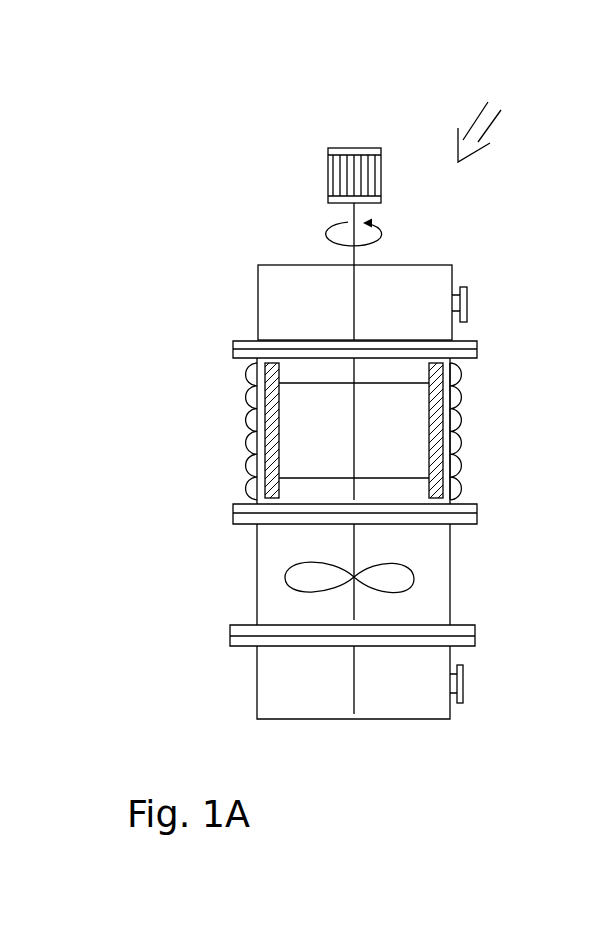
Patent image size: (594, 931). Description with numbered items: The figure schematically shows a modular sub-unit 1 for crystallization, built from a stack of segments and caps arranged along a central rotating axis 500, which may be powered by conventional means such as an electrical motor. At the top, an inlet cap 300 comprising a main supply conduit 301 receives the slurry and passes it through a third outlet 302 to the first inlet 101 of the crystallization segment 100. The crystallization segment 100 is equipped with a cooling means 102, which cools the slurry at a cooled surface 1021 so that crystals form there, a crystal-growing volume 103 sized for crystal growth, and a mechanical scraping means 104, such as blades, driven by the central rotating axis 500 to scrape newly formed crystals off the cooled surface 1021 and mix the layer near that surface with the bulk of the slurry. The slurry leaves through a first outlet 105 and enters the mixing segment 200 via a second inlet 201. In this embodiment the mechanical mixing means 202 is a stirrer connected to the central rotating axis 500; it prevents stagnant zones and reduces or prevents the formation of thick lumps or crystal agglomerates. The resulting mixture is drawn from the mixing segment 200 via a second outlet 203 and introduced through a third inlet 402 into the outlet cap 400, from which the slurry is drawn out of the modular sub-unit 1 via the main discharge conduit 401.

The modular sub-unit 1 is at (484, 115).
The central rotating axis 500 is at (353, 261).
The inlet cap 300 is at (290, 305).
The main supply conduit 301 is at (463, 304).
The third outlet 302 is at (242, 345).
The first inlet 101 is at (463, 355).
The crystallization segment 100 is at (290, 492).
The cooling means 102 is at (456, 390).
The cooled surface 1021 is at (448, 426).
The crystal-growing volume 103 is at (415, 457).
The mechanical scraping means 104 is at (273, 410).
The first outlet 105 is at (240, 512).
The second inlet 201 is at (461, 521).
The mixing segment 200 is at (288, 612).
The mechanical mixing means 202 is at (414, 581).
The second outlet 203 is at (239, 628).
The third inlet 402 is at (460, 642).
The outlet cap 400 is at (287, 712).
The main discharge conduit 401 is at (458, 684).